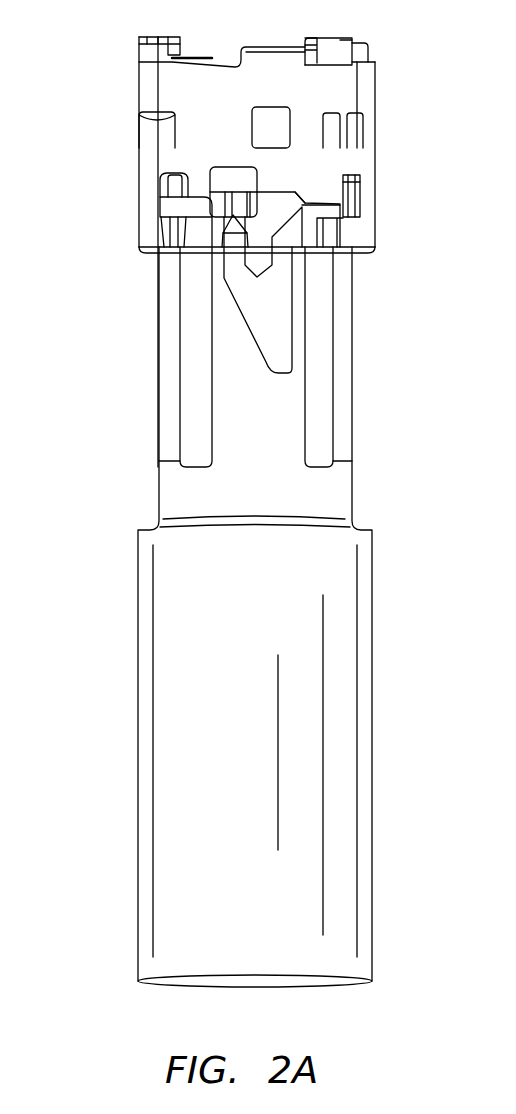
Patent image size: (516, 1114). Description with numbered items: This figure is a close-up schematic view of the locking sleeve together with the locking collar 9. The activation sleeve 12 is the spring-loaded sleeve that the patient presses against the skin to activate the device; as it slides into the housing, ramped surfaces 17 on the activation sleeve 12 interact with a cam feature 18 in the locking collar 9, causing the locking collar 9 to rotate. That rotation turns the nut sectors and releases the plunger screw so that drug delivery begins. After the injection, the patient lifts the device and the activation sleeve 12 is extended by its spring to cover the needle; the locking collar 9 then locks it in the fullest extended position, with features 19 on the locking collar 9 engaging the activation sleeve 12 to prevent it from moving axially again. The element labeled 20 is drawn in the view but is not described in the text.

The locking collar 9 is at (148, 202).
The activation sleeve 12 is at (180, 730).
The ramped surfaces 17 is at (247, 322).
The cam feature 18 is at (230, 232).
The features 19 is at (230, 215).
The ledge 20 is at (303, 247).